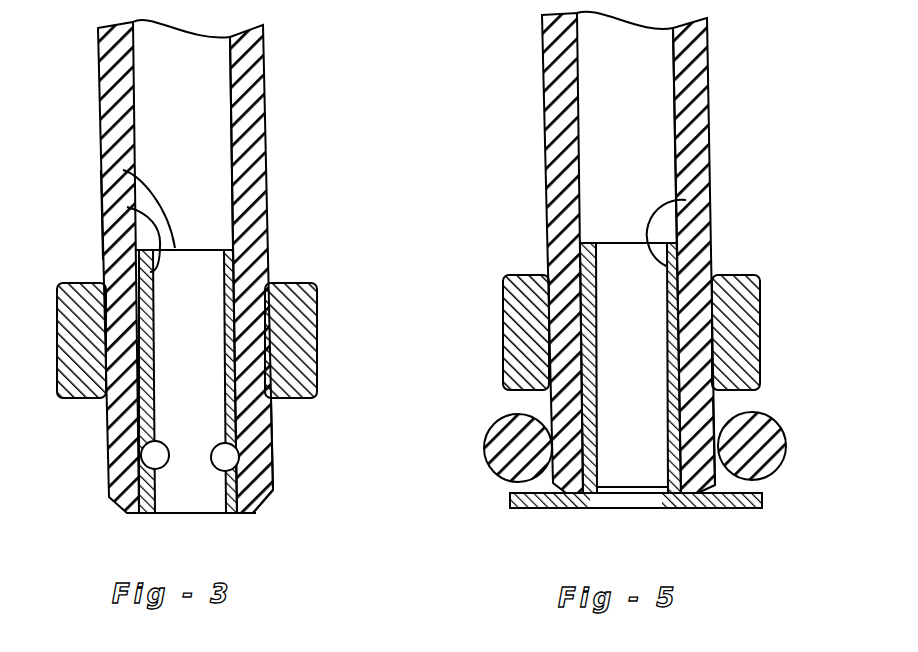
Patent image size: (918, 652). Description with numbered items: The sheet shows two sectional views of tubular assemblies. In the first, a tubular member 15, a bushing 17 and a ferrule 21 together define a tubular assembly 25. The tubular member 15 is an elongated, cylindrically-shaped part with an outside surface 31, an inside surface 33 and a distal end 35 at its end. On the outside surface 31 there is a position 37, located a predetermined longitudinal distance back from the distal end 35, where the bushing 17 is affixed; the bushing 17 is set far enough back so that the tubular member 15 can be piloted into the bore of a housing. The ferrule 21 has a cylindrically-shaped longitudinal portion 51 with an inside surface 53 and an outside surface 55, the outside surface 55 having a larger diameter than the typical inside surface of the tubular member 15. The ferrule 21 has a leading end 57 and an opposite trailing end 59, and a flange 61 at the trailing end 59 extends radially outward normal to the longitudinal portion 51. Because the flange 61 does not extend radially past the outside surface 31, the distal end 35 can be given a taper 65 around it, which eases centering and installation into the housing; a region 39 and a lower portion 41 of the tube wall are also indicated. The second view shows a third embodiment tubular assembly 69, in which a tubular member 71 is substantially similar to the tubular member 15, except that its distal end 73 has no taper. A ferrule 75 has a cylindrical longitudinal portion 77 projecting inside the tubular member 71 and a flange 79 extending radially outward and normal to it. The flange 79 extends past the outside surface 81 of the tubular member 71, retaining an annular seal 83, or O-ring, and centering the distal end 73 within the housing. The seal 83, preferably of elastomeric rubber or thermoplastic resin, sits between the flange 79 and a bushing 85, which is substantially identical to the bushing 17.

In FIG. 3, the tubular member 15 is at (263, 65).
In FIG. 3, the tubular assembly 25 is at (365, 90).
In FIG. 3, the outside surface 31 is at (265, 155).
In FIG. 3, the inside surface 33 is at (230, 128).
In FIG. 3, the leading end 57 is at (123, 170).
In FIG. 3, the inside surface 53 is at (105, 202).
In FIG. 3, the outside surface 55 is at (105, 262).
In FIG. 3, the sleeve top shoulder 39 is at (268, 257).
In FIG. 3, the position 37 is at (265, 273).
In FIG. 3, the bushing 17 is at (315, 322).
In FIG. 3, the lower tube portion 41 is at (273, 420).
In FIG. 3, the longitudinal portion 51 is at (112, 453).
In FIG. 3, the ferrule 21 is at (273, 457).
In FIG. 3, the distal end 35 is at (275, 480).
In FIG. 3, the taper 65 is at (270, 490).
In FIG. 3, the trailing end 59 is at (175, 513).
In FIG. 3, the flange 61 is at (245, 513).
In FIG. 5, the tubular member 71 is at (708, 52).
In FIG. 5, the outside surface 81 is at (708, 117).
In FIG. 5, the longitudinal portion 77 is at (695, 191).
In FIG. 5, the tubular assembly 69 is at (768, 221).
In FIG. 5, the bushing 85 is at (760, 287).
In FIG. 5, the distal end 73 is at (715, 405).
In FIG. 5, the seal 83 is at (785, 430).
In FIG. 5, the flange 79 is at (732, 507).
In FIG. 5, the ferrule 75 is at (672, 453).